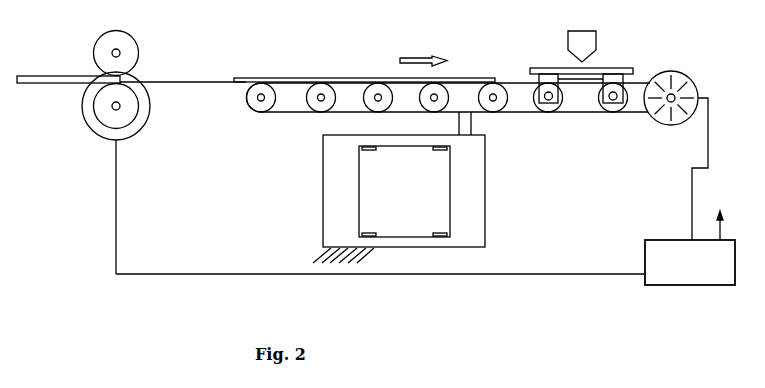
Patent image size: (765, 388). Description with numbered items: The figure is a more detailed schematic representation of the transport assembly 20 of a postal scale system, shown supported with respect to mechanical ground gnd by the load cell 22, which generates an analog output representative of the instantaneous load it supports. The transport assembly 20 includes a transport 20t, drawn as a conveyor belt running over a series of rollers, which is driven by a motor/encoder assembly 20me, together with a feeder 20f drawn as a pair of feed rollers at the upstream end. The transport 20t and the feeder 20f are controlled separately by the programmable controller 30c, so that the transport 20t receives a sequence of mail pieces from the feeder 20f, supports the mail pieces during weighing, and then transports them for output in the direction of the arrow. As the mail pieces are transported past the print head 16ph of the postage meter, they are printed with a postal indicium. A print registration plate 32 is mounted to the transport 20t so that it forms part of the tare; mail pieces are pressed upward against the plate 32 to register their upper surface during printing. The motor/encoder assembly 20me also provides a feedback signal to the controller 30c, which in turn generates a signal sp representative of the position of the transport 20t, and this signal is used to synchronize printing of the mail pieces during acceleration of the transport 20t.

The feeder 20f is at (150, 64).
The transport assembly 20 is at (512, 46).
The print registration plate 32 is at (573, 79).
The print head 16ph is at (597, 42).
The transport 20t is at (663, 48).
The motor/encoder assembly 20me is at (655, 128).
The load cell 22 is at (478, 265).
The mechanical ground gnd is at (317, 256).
The programmable controller 30c is at (690, 262).
The signal sp is at (717, 225).